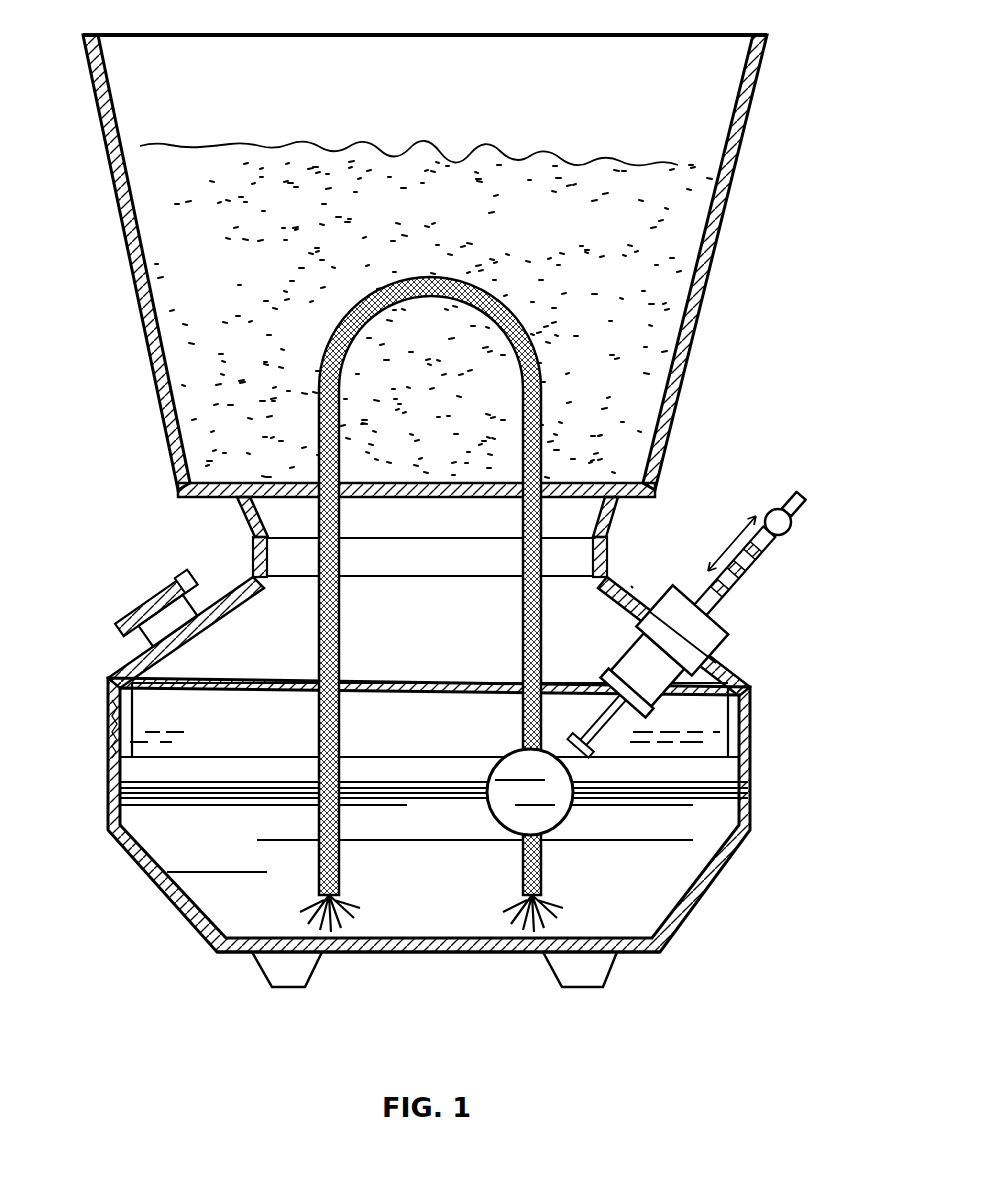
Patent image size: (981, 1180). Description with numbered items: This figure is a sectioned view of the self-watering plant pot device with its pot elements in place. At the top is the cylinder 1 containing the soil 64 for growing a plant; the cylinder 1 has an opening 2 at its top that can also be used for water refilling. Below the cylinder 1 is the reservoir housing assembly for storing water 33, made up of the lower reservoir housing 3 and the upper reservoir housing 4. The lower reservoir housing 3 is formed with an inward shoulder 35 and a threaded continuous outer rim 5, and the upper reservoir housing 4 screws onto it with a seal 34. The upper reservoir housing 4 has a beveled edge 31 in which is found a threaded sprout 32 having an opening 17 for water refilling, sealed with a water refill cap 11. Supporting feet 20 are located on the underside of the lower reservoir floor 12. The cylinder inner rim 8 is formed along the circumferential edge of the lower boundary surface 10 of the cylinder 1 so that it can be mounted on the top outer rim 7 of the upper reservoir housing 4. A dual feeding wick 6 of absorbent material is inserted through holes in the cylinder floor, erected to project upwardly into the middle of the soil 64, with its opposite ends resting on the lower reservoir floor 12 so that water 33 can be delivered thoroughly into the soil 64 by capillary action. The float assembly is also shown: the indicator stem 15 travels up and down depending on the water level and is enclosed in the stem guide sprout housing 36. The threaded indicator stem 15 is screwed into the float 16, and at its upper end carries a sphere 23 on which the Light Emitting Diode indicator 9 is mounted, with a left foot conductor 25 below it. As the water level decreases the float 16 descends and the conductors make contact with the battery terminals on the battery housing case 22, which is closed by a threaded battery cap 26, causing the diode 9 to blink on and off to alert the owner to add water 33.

The cylinder 1 is at (125, 257).
The opening 2 is at (465, 78).
The lower reservoir housing 3 is at (158, 890).
The upper reservoir housing 4 is at (412, 643).
The threaded continuous outer rim 5 is at (134, 713).
The dual feeding wick 6 is at (319, 383).
The top outer rim 7 is at (263, 596).
The cylinder inner rim 8 is at (268, 560).
The Light Emitting Diode indicator 9 is at (794, 493).
The lower boundary surface 10 is at (243, 510).
The water refill cap 11 is at (132, 612).
The lower reservoir floor 12 is at (447, 936).
The indicator stem 15 is at (598, 716).
The float 16 is at (517, 752).
The opening 17 is at (175, 625).
The supporting feet 20 is at (268, 988).
The battery housing case 22 is at (628, 660).
The sphere 23 is at (790, 531).
The left foot conductor 25 is at (757, 568).
The battery cap 26 is at (652, 705).
The beveled edge 31 is at (110, 677).
The threaded sprout 32 is at (203, 582).
The water 33 is at (675, 805).
The seal 34 is at (117, 737).
The inward shoulder 35 is at (112, 750).
The stem guide sprout housing 36 is at (729, 630).
The soil 64 is at (673, 230).